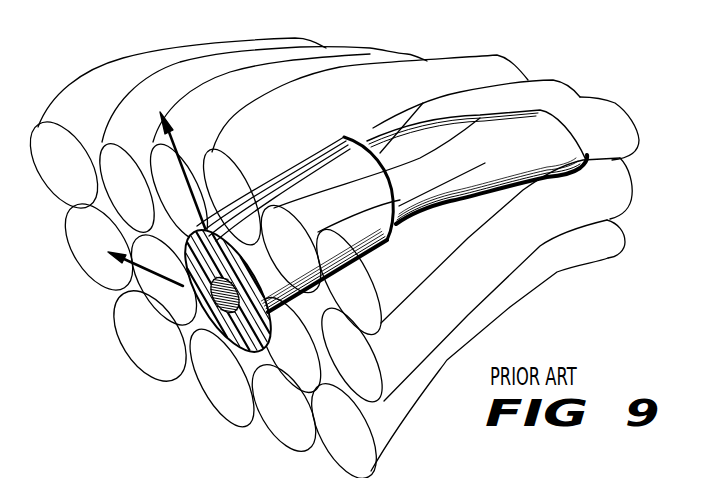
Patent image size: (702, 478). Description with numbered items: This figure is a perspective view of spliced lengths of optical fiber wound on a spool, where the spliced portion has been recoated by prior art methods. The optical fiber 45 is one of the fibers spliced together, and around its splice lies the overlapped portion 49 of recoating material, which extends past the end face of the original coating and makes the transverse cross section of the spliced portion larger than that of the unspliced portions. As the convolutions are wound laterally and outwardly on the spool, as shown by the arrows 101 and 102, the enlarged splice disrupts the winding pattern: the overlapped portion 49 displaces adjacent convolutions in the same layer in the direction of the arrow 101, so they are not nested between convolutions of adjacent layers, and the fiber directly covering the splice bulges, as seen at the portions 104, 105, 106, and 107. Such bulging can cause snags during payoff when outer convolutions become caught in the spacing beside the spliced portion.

The optical fiber 45 is at (418, 212).
The overlapped portion of recoating material 49 is at (278, 173).
The arrow 101 is at (151, 275).
The arrow 102 is at (173, 148).
The bulging fiber portion 104 is at (259, 42).
The bulging fiber portion 105 is at (326, 50).
The bulging fiber portion 106 is at (387, 57).
The bulging fiber portion 107 is at (447, 60).